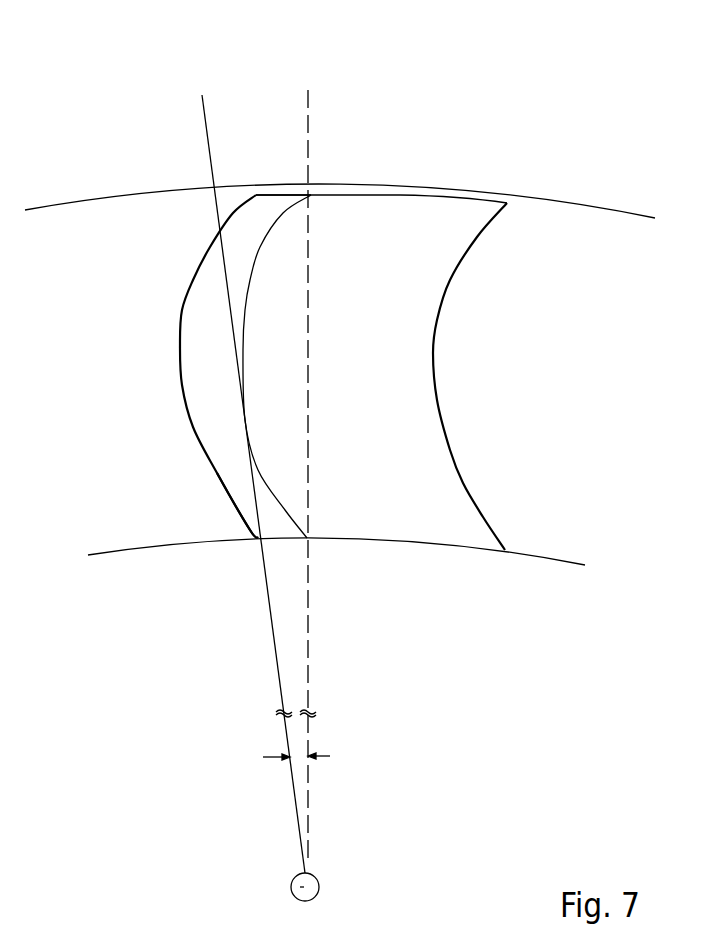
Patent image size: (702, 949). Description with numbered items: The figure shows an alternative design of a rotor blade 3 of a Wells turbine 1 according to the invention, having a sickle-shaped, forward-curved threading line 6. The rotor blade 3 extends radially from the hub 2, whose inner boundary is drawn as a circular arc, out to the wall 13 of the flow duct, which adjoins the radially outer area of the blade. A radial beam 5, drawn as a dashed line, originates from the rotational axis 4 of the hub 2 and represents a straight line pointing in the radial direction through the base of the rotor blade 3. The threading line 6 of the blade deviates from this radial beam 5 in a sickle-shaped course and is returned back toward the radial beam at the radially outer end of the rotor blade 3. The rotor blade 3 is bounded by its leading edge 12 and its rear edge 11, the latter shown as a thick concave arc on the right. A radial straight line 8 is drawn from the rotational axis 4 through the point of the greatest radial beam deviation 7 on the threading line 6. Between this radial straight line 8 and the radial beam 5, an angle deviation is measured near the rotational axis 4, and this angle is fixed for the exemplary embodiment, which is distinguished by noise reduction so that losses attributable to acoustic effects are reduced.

The Wells turbine 1 is at (567, 84).
The hub 2 is at (125, 567).
The rotor blade 3 is at (192, 391).
The rotational axis 4 is at (318, 877).
The radial beam 5 is at (312, 128).
The threading line 6 is at (248, 290).
The point of the greatest radial beam deviation 7 is at (244, 393).
The radial straight line 8 is at (208, 136).
The rear edge 11 is at (463, 481).
The leading edge 12 is at (213, 483).
The wall of the flow duct 13 is at (91, 203).